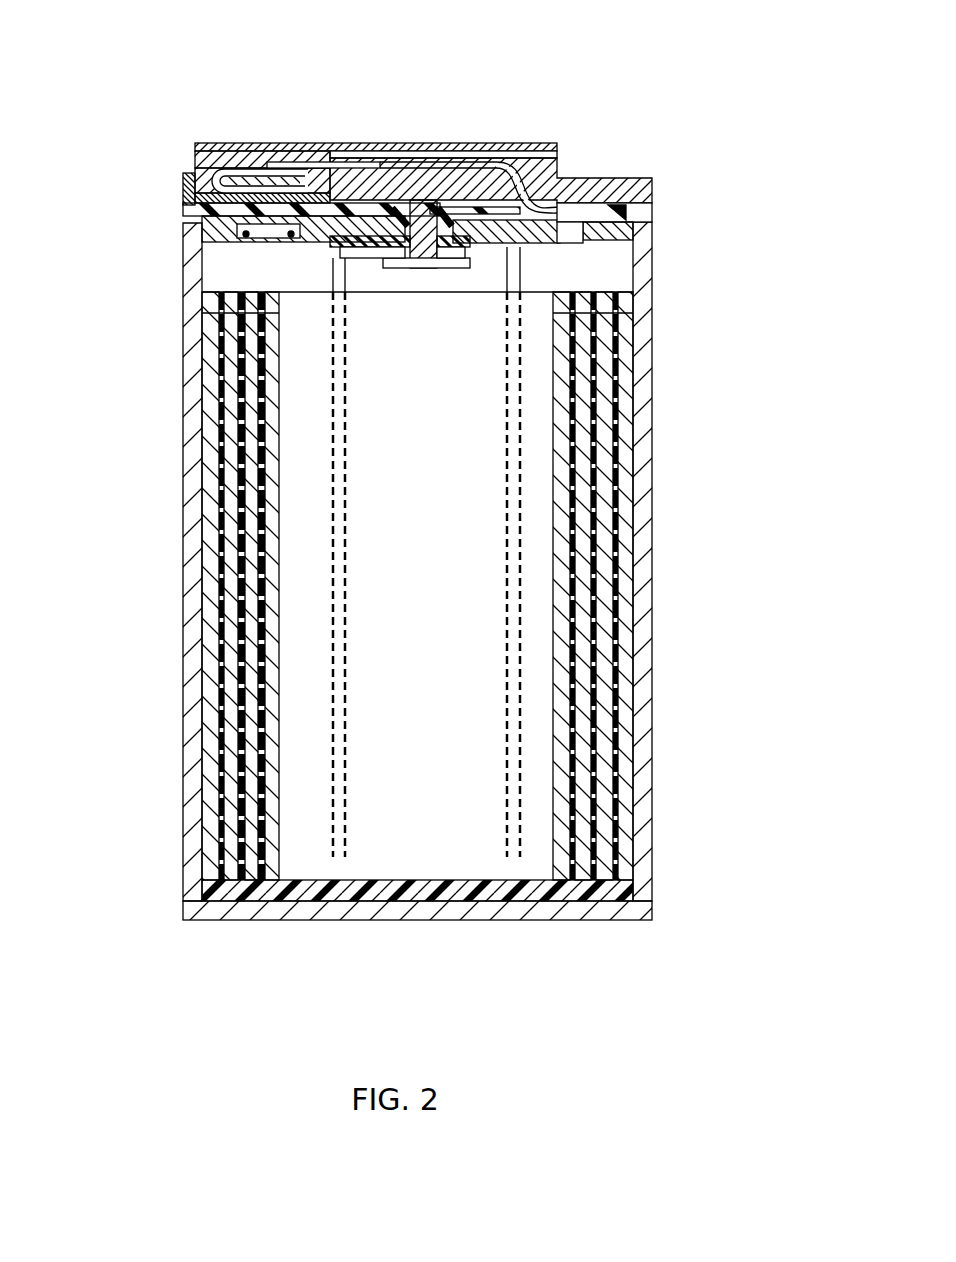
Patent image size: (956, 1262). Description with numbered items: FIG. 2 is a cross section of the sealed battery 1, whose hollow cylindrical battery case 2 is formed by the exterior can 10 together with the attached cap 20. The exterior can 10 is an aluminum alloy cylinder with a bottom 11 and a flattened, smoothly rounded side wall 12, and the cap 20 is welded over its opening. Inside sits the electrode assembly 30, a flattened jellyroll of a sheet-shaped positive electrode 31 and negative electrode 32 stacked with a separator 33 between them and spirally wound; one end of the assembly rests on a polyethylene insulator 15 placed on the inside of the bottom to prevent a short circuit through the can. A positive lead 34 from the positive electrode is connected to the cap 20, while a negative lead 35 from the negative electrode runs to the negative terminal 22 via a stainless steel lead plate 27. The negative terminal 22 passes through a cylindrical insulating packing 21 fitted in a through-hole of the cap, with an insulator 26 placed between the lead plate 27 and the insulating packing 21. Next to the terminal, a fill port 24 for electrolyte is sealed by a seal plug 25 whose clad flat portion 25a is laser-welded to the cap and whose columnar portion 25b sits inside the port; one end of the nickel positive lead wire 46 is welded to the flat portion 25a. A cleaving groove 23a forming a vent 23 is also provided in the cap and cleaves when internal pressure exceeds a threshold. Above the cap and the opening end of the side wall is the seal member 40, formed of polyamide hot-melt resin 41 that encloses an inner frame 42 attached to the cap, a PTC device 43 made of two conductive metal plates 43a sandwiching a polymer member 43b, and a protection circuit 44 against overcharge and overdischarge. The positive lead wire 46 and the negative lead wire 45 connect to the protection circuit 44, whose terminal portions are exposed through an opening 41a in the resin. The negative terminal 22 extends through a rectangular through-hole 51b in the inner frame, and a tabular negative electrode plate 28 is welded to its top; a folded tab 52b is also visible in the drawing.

The sealed battery 1 is at (606, 106).
The battery case 2 is at (662, 750).
The exterior can 10 is at (658, 656).
The bottom 11 is at (498, 905).
The side wall 12 is at (192, 742).
The insulator 15 is at (343, 885).
The cap 20 is at (200, 236).
The insulating packing 21 is at (398, 238).
The negative terminal 22 is at (428, 266).
The vent 23 is at (253, 250).
The cleaving groove 23a is at (278, 250).
The fill port 24 is at (573, 227).
The seal plug 25 is at (706, 185).
The flat portion 25a is at (610, 212).
The columnar portion 25b is at (615, 233).
The insulator 26 is at (455, 256).
The lead plate 27 is at (350, 256).
The negative electrode plate 28 is at (387, 203).
The electrode assembly 30 is at (235, 284).
The positive electrode 31 is at (622, 460).
The negative electrode 32 is at (228, 456).
The separator 33 is at (622, 386).
The positive lead 34 is at (522, 278).
The negative lead 35 is at (333, 272).
The seal member 40 is at (447, 140).
The resin 41 is at (590, 183).
The opening 41a is at (527, 152).
The inner frame 42 is at (190, 218).
The PTC device 43 is at (127, 106).
The conductive metal plates 43a is at (217, 170).
The polymer member 43b is at (190, 205).
The protection circuit 44 is at (424, 150).
The negative lead wire 45 is at (307, 146).
The positive lead wire 46 is at (562, 185).
The through-hole 51b is at (432, 232).
The folded tab 52b is at (247, 178).